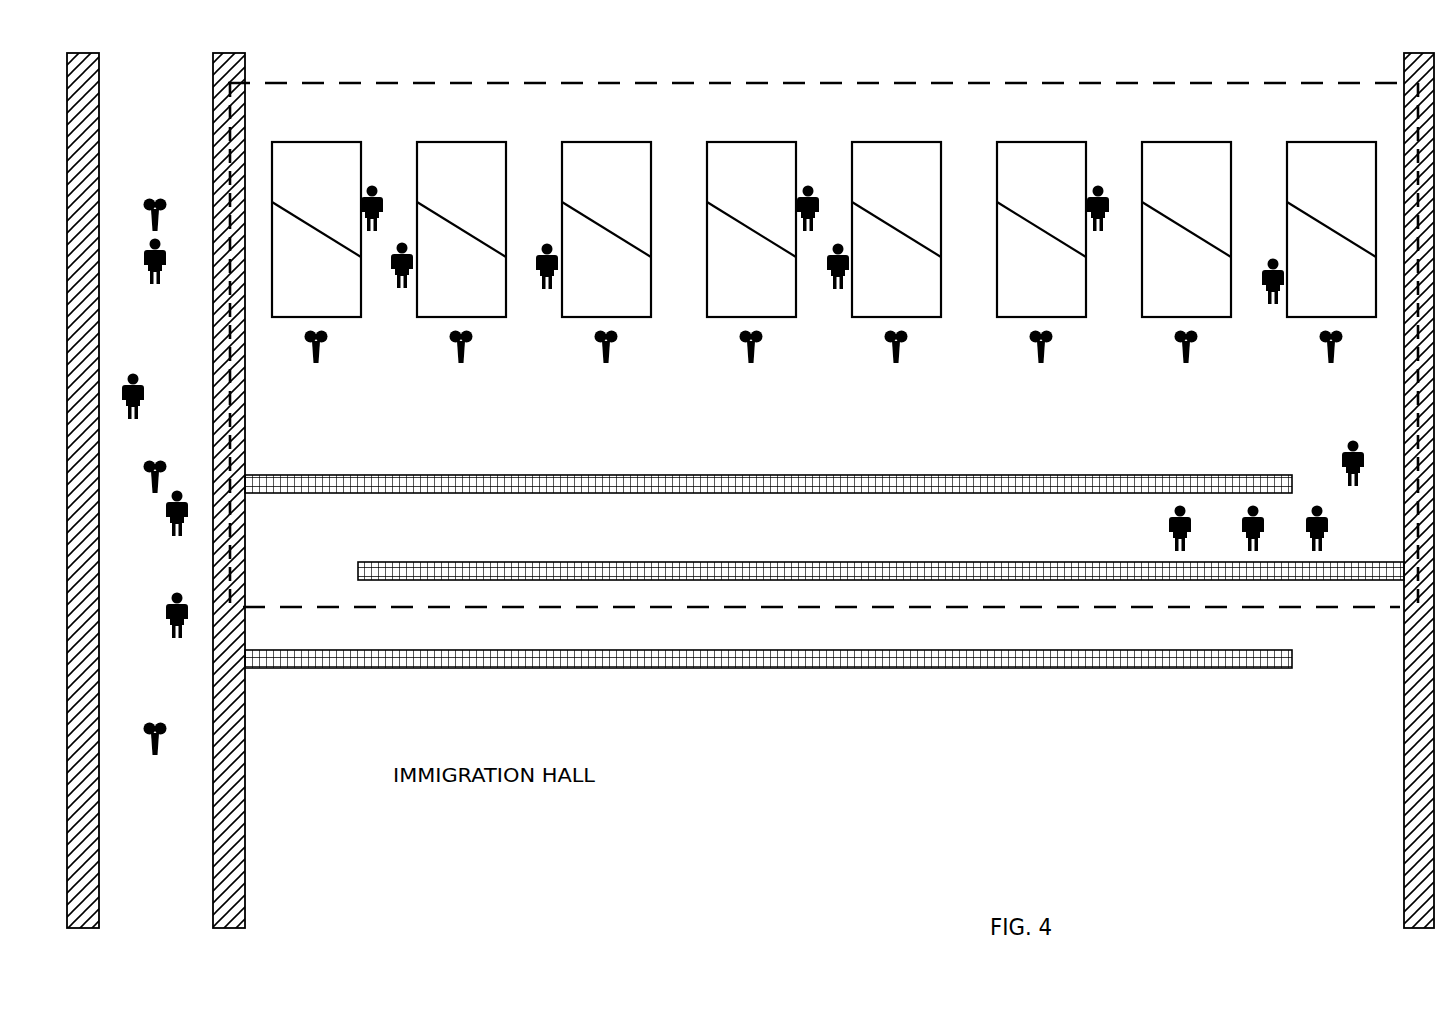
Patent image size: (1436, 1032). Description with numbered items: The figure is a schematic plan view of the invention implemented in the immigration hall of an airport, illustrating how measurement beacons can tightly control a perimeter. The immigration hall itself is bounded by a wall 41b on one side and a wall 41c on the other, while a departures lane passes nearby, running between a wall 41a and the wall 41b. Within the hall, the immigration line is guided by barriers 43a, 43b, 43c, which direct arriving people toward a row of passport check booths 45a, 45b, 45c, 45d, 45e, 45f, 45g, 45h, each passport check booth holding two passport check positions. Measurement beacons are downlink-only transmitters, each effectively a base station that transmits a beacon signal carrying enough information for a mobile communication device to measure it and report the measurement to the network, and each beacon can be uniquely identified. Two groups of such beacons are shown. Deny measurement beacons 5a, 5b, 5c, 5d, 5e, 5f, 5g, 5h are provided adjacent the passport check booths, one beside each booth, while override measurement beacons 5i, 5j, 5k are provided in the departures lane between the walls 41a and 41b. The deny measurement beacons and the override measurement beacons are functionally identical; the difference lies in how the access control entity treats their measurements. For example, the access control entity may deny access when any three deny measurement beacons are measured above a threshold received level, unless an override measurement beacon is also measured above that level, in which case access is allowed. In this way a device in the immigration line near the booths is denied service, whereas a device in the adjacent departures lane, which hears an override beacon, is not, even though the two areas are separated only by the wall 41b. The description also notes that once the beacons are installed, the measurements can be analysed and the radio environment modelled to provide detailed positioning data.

The wall 41a is at (97, 845).
The wall 41b is at (243, 68).
The wall 41c is at (1418, 53).
The barrier 43a is at (795, 667).
The barrier 43b is at (912, 565).
The barrier 43c is at (862, 477).
The passport check booth 45a is at (313, 142).
The passport check booth 45b is at (458, 142).
The passport check booth 45c is at (603, 142).
The passport check booth 45d is at (748, 142).
The passport check booth 45e is at (893, 142).
The passport check booth 45f is at (1038, 142).
The passport check booth 45g is at (1183, 142).
The passport check booth 45h is at (1328, 142).
The deny measurement beacon 5a is at (318, 360).
The deny measurement beacon 5b is at (463, 360).
The deny measurement beacon 5c is at (608, 360).
The deny measurement beacon 5d is at (753, 360).
The deny measurement beacon 5e is at (898, 360).
The deny measurement beacon 5f is at (1043, 360).
The deny measurement beacon 5g is at (1188, 360).
The deny measurement beacon 5h is at (1333, 360).
The override measurement beacon 5i is at (160, 200).
The override measurement beacon 5j is at (163, 458).
The override measurement beacon 5k is at (163, 720).